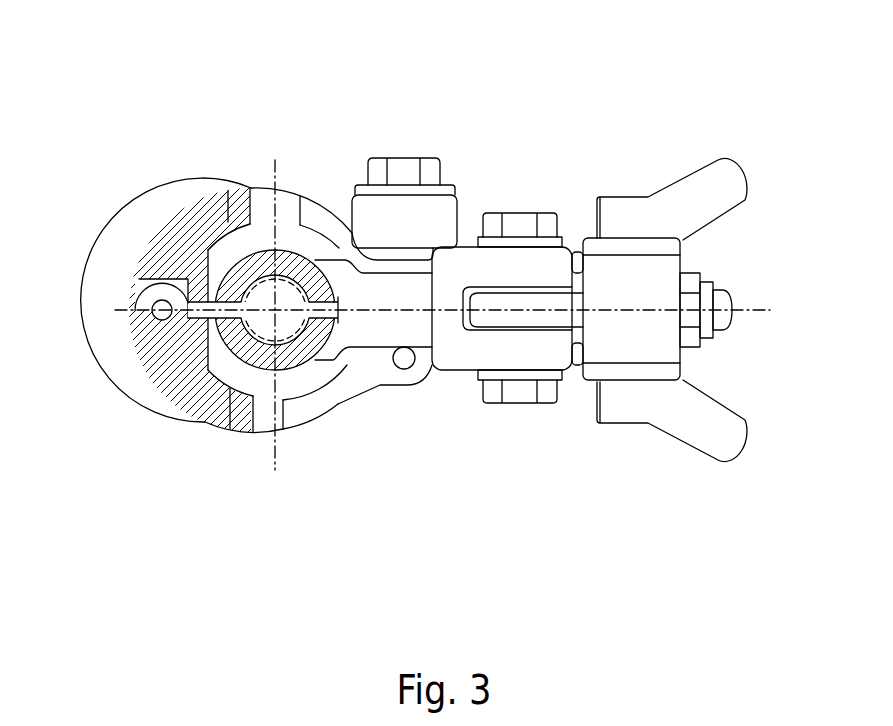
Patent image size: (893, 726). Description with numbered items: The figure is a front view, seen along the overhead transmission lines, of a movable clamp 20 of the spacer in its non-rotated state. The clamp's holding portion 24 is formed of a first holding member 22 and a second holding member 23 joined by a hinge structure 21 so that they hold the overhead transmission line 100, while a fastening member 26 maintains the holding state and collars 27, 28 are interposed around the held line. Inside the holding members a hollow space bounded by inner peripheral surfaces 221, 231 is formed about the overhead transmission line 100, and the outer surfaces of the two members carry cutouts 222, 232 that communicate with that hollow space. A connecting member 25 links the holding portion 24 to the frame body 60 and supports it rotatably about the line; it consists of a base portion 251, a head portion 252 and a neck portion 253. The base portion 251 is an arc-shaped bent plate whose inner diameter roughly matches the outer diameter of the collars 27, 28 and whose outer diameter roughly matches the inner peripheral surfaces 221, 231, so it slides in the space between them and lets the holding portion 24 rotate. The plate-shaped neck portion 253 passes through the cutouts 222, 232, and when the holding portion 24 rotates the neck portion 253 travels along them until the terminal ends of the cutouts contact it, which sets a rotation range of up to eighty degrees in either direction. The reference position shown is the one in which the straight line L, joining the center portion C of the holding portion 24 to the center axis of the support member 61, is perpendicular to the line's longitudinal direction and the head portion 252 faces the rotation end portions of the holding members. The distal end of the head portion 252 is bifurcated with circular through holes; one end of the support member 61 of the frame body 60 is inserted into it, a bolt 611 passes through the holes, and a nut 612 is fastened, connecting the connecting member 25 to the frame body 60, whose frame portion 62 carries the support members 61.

The movable clamp 20 is at (320, 118).
The hinge structure 21 is at (150, 316).
The first holding member 22 is at (155, 377).
The inner peripheral surface 221 is at (285, 440).
The cutout 222 is at (297, 398).
The second holding member 23 is at (155, 235).
The inner peripheral surface 231 is at (290, 250).
The cutout 232 is at (290, 185).
The holding portion 24 is at (177, 205).
The connecting member 25 is at (437, 388).
The base portion 251 is at (340, 355).
The head portion 252 is at (502, 367).
The neck portion 253 is at (402, 332).
The fastening member 26 is at (420, 158).
The collar 27 is at (228, 357).
The collar 28 is at (232, 245).
The overhead transmission line 100 is at (205, 422).
The frame body 60 is at (692, 163).
The support member 61 is at (577, 318).
The frame portion 62 is at (688, 440).
The bolt 611 is at (528, 213).
The nut 612 is at (512, 403).
The center portion C is at (298, 305).
The straight line L is at (742, 300).